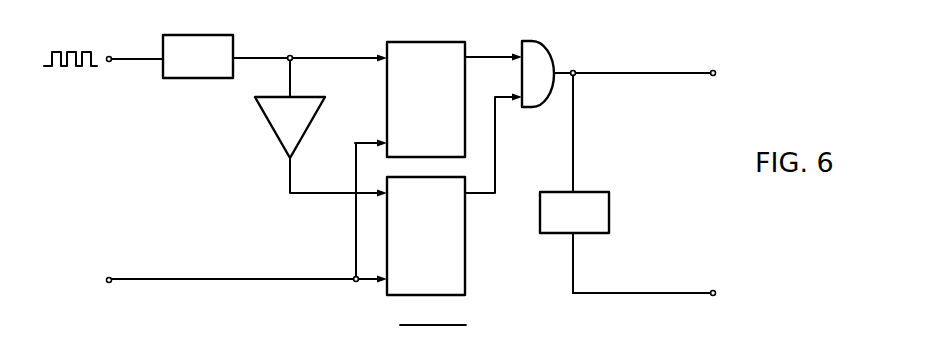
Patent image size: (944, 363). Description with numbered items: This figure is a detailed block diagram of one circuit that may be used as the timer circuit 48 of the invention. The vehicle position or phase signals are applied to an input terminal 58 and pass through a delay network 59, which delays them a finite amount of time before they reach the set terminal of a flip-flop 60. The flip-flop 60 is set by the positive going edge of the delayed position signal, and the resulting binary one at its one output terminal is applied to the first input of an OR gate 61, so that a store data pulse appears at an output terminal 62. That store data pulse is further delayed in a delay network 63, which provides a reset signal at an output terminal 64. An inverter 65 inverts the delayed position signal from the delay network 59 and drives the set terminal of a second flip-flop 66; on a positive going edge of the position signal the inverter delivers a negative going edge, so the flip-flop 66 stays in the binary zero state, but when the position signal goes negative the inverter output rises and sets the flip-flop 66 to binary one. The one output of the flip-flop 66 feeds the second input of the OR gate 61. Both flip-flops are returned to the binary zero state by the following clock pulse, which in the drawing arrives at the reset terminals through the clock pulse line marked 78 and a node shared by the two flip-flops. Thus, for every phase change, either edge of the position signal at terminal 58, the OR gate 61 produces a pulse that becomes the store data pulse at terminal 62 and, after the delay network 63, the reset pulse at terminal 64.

The input terminal 58 is at (119, 50).
The delay network 59 is at (233, 47).
The flip-flop 60 is at (437, 42).
The OR gate 61 is at (548, 48).
The output terminal 62 is at (715, 71).
The delay network 63 is at (578, 192).
The output terminal 64 is at (715, 291).
The inverter 65 is at (266, 117).
The flip-flop 66 is at (455, 177).
The timer circuit 48 is at (528, 180).
The clock pulse input terminal 78 is at (107, 278).